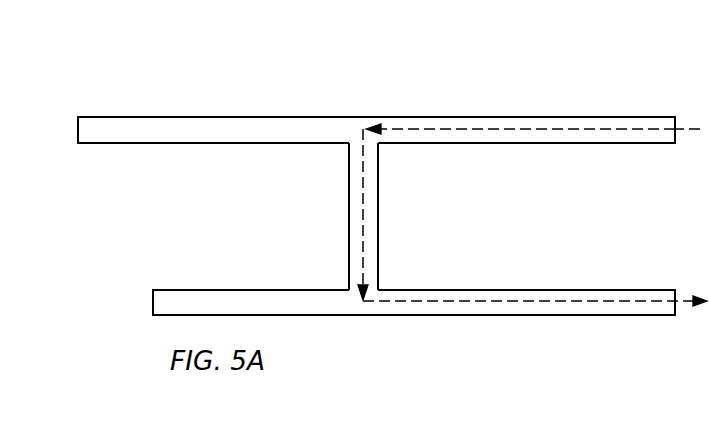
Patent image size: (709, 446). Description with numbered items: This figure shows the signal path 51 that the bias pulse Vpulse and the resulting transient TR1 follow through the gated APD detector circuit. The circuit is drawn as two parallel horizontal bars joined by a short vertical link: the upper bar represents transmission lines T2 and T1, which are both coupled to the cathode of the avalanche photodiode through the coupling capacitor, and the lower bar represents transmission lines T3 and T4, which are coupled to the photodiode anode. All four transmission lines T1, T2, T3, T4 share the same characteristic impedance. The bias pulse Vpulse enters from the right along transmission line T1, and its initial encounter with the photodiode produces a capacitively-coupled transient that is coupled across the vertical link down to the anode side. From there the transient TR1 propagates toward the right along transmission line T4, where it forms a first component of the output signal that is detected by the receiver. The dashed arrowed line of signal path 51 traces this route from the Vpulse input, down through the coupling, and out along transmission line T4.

The transmission line T1 is at (607, 143).
The transmission line T2 is at (192, 117).
The transmission line T3 is at (272, 290).
The transmission line T4 is at (547, 289).
The transient TR1 is at (392, 209).
The signal path 51 is at (407, 130).
The bias pulse Vpulse is at (545, 115).